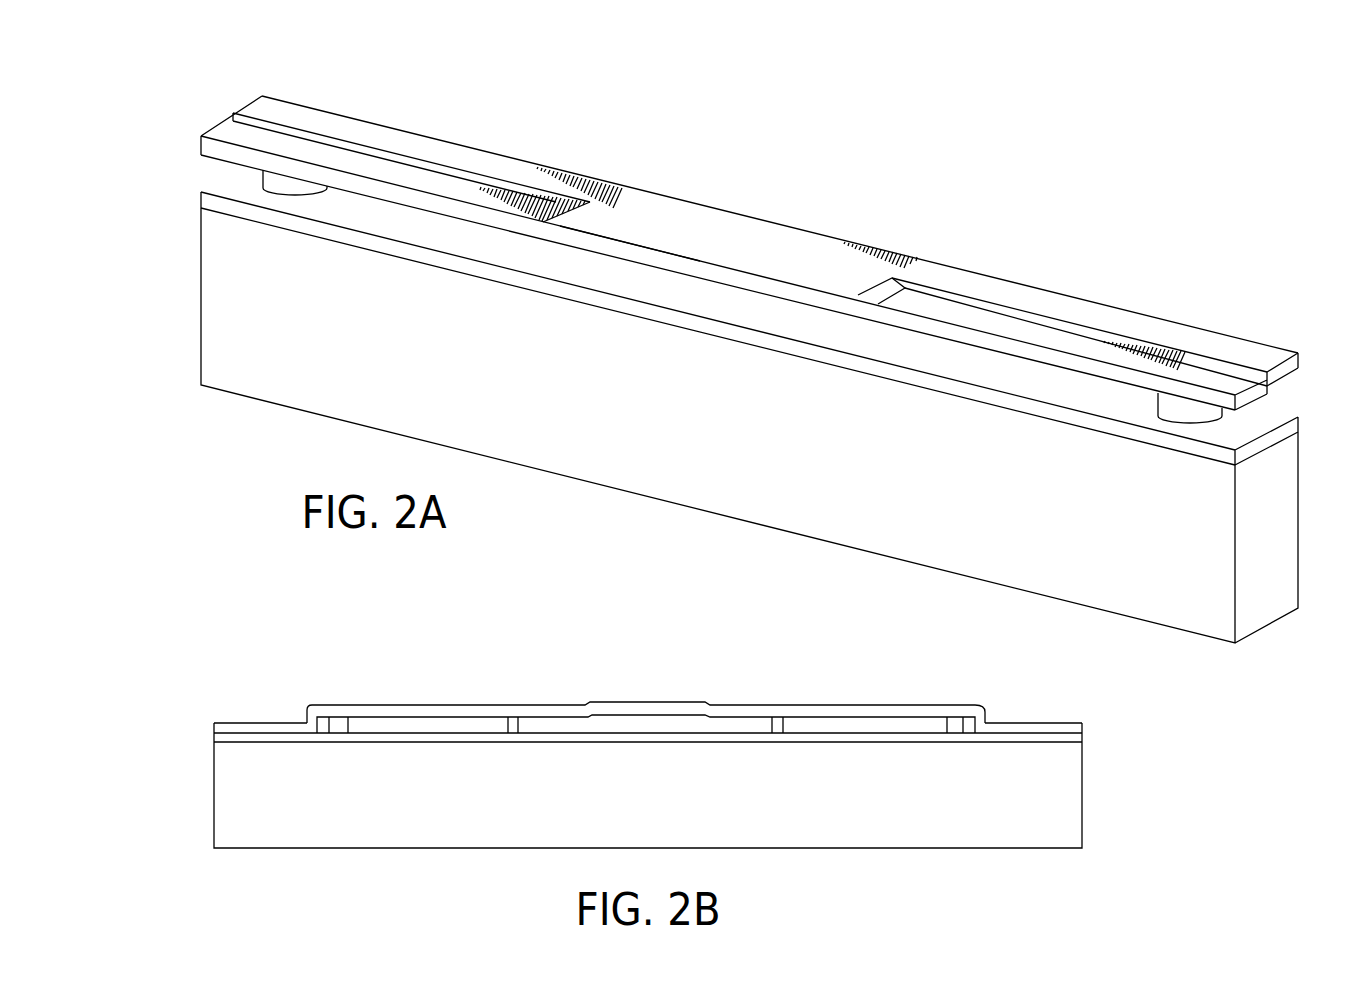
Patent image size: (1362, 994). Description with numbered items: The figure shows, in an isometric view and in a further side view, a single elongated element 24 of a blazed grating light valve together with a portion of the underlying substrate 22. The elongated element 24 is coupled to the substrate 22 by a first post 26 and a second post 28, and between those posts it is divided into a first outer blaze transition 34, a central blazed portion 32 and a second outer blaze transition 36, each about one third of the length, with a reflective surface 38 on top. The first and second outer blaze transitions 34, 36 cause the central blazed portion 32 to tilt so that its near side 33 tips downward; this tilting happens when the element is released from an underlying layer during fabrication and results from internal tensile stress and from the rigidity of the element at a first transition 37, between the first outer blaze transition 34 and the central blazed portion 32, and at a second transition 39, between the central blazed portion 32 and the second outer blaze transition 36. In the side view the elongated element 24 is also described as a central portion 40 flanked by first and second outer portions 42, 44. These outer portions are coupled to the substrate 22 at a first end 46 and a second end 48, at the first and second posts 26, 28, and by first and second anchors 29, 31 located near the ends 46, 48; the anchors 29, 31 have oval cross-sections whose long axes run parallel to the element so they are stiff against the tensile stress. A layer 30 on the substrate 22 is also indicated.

In FIG. 2A, the substrate 22 is at (684, 437).
In FIG. 2B, the substrate 22 is at (647, 809).
In FIG. 2A, the elongated element 24 is at (345, 57).
In FIG. 2B, the elongated element 24 is at (840, 706).
In FIG. 2A, the first post 26 is at (287, 196).
In FIG. 2B, the first post 26 is at (513, 731).
In FIG. 2A, the second post 28 is at (1183, 418).
In FIG. 2B, the second post 28 is at (778, 731).
In FIG. 2B, the first anchor 29 is at (338, 731).
In FIG. 2A, the electrode layer 30 is at (931, 381).
In FIG. 2B, the electrode layer 30 is at (1083, 737).
In FIG. 2B, the second anchor 31 is at (957, 731).
In FIG. 2A, the central blazed portion 32 is at (650, 178).
In FIG. 2B, the central blazed portion 32 is at (707, 689).
In FIG. 2A, the near side 33 is at (612, 240).
In FIG. 2A, the first outer blaze transition 34 is at (352, 106).
In FIG. 2B, the first outer blaze transition 34 is at (587, 689).
In FIG. 2A, the second outer blaze transition 36 is at (946, 248).
In FIG. 2B, the second outer blaze transition 36 is at (777, 689).
In FIG. 2A, the first transition 37 is at (552, 231).
In FIG. 2A, the reflective surface 38 is at (712, 251).
In FIG. 2A, the second transition 39 is at (866, 310).
In FIG. 2B, the central portion 40 is at (780, 637).
In FIG. 2B, the first outer portion 42 is at (517, 637).
In FIG. 2B, the second outer portion 44 is at (983, 637).
In FIG. 2B, the first end 46 is at (291, 708).
In FIG. 2B, the second end 48 is at (1000, 707).